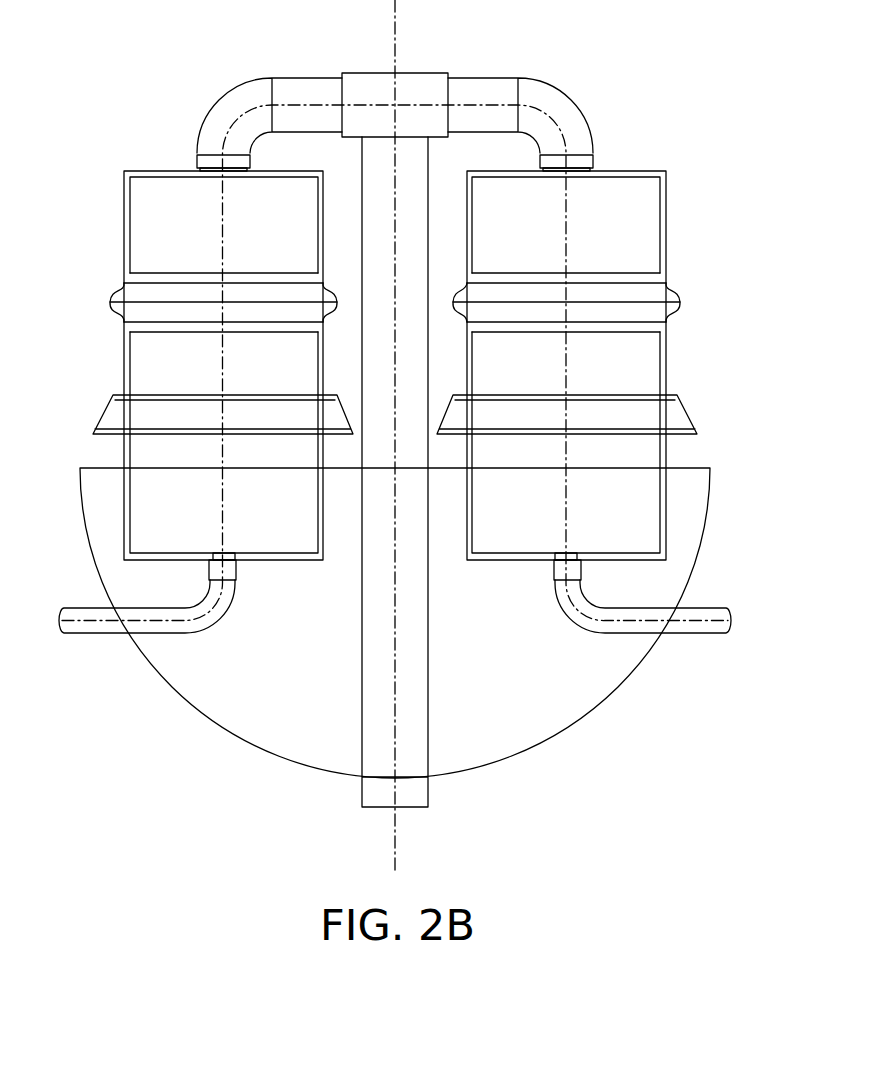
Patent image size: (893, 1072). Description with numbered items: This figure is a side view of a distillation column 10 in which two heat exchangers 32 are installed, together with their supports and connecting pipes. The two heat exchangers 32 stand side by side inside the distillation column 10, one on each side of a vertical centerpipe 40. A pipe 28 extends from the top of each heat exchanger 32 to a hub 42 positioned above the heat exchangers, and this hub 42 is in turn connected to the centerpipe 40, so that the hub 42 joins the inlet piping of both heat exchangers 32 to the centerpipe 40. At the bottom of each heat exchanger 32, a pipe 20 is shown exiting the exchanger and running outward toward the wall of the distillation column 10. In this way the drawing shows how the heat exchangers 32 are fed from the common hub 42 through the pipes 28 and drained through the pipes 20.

The distillation column 10 is at (710, 482).
The pipes 20 is at (228, 610).
The inlet pipes 28 is at (220, 100).
The heat exchangers 32 is at (123, 513).
The centerpipe 40 is at (362, 700).
The hub 42 is at (365, 73).